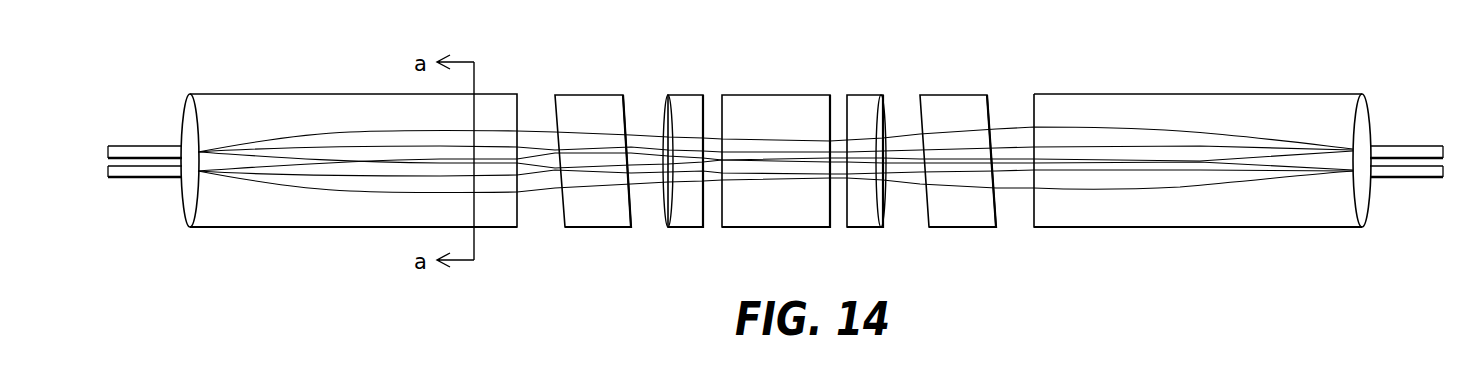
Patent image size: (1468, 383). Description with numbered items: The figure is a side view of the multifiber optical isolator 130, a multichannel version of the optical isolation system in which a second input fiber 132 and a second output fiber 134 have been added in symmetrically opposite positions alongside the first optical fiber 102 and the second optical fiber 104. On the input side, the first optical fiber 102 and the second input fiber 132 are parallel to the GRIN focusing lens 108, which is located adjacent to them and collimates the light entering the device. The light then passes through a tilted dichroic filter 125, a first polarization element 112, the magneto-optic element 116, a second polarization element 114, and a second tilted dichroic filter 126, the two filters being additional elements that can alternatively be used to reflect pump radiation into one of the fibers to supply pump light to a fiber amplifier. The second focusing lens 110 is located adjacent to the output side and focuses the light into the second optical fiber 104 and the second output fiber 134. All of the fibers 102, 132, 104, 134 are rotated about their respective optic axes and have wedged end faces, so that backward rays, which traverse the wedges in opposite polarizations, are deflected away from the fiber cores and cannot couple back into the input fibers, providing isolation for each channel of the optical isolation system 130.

The first optical fiber 102 is at (139, 145).
The second input fiber 132 is at (145, 181).
The focusing lens 108 is at (338, 93).
The dichroic filter 125 is at (585, 94).
The polarization element 112 is at (688, 94).
The magneto-optic element 116 is at (773, 94).
The polarization element 114 is at (865, 94).
The dichroic filter 126 is at (959, 94).
The focusing lens 110 is at (1170, 94).
The second optical fiber 104 is at (1413, 146).
The second output fiber 134 is at (1412, 179).
The multi-functional optical isolation system 130 is at (998, 291).